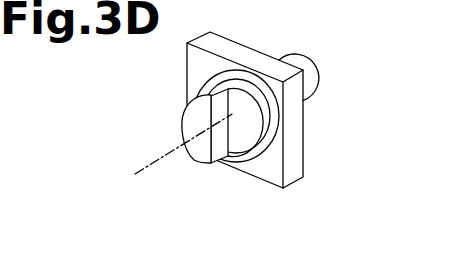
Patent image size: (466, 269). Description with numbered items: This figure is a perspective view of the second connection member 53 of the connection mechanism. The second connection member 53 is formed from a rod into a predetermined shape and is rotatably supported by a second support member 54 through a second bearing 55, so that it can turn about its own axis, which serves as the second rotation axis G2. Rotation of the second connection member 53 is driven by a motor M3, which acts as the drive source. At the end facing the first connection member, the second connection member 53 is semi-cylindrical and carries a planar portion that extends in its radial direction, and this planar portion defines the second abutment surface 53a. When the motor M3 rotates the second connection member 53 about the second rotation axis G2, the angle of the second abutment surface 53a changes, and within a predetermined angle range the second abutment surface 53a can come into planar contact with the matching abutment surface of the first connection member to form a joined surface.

The motor M3 is at (315, 75).
The second connection member 53 is at (198, 139).
The second abutment surface 53a is at (217, 144).
The second support member 54 is at (297, 123).
The second bearing 55 is at (266, 139).
The second rotation axis G2 is at (171, 181).